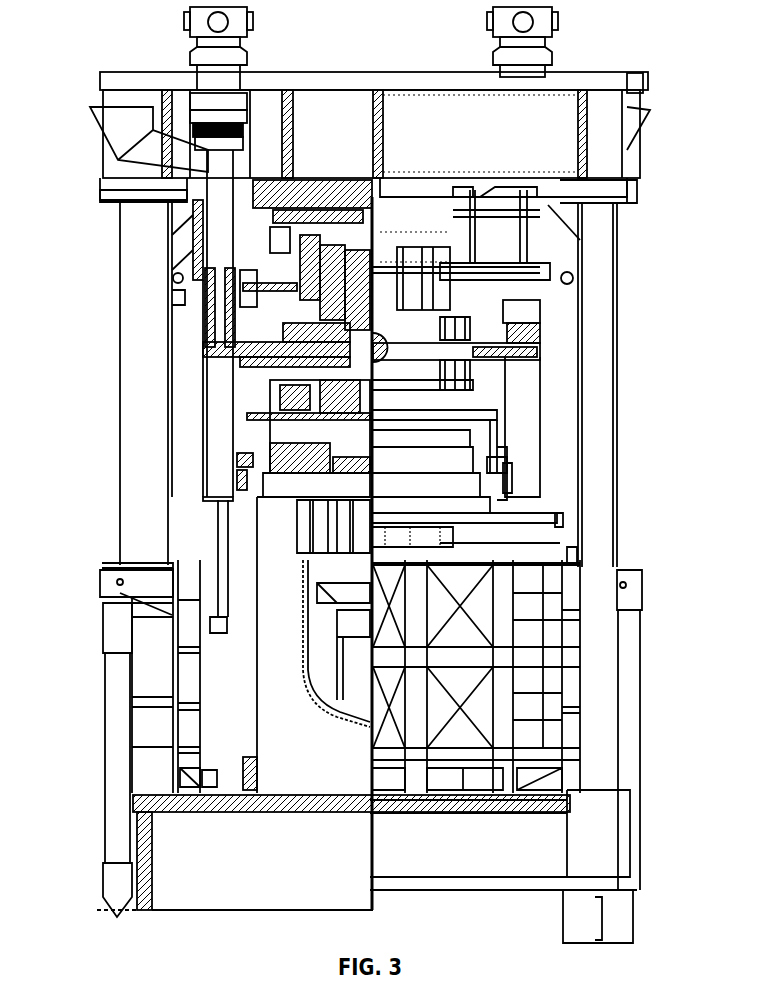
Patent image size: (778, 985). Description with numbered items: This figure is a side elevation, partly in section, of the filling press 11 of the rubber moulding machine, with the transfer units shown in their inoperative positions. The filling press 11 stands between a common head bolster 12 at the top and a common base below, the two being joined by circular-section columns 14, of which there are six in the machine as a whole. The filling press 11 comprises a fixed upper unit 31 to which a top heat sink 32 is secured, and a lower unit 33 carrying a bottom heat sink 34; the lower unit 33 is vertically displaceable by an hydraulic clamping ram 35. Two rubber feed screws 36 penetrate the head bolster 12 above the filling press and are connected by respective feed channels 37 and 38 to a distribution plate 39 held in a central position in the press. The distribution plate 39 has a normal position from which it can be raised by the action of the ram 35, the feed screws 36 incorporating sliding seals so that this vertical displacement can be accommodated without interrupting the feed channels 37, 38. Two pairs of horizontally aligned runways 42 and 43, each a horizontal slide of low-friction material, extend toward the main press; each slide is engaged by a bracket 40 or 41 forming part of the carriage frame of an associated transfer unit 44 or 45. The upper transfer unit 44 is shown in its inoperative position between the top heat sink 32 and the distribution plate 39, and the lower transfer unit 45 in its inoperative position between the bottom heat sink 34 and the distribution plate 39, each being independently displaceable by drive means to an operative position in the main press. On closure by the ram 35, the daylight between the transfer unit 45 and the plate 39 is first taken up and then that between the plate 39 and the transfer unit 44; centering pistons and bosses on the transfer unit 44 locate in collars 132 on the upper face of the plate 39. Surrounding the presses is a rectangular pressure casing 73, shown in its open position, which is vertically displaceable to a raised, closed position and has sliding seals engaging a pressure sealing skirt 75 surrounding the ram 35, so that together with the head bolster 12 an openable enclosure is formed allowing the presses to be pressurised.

The filling press 11 is at (113, 375).
The head bolster 12 is at (441, 97).
The columns 14 is at (130, 477).
The fixed upper unit 31 is at (270, 230).
The top heat sink 32 is at (340, 228).
The lower unit 33 is at (275, 490).
The bottom heat sink 34 is at (318, 485).
The hydraulic clamping ram 35 is at (347, 653).
The rubber feed screws 36 is at (225, 170).
The feed channel 37 is at (217, 372).
The feed channel 38 is at (505, 372).
The distribution plate 39 is at (273, 377).
The bracket 40 is at (247, 267).
The bracket 41 is at (237, 457).
The runways 42 is at (203, 315).
The runways 43 is at (235, 480).
The upper transfer unit 44 is at (415, 263).
The lower transfer unit 45 is at (373, 395).
The pressure casing 73 is at (557, 540).
The pressure sealing skirt 75 is at (300, 731).
The collars 132 is at (525, 330).